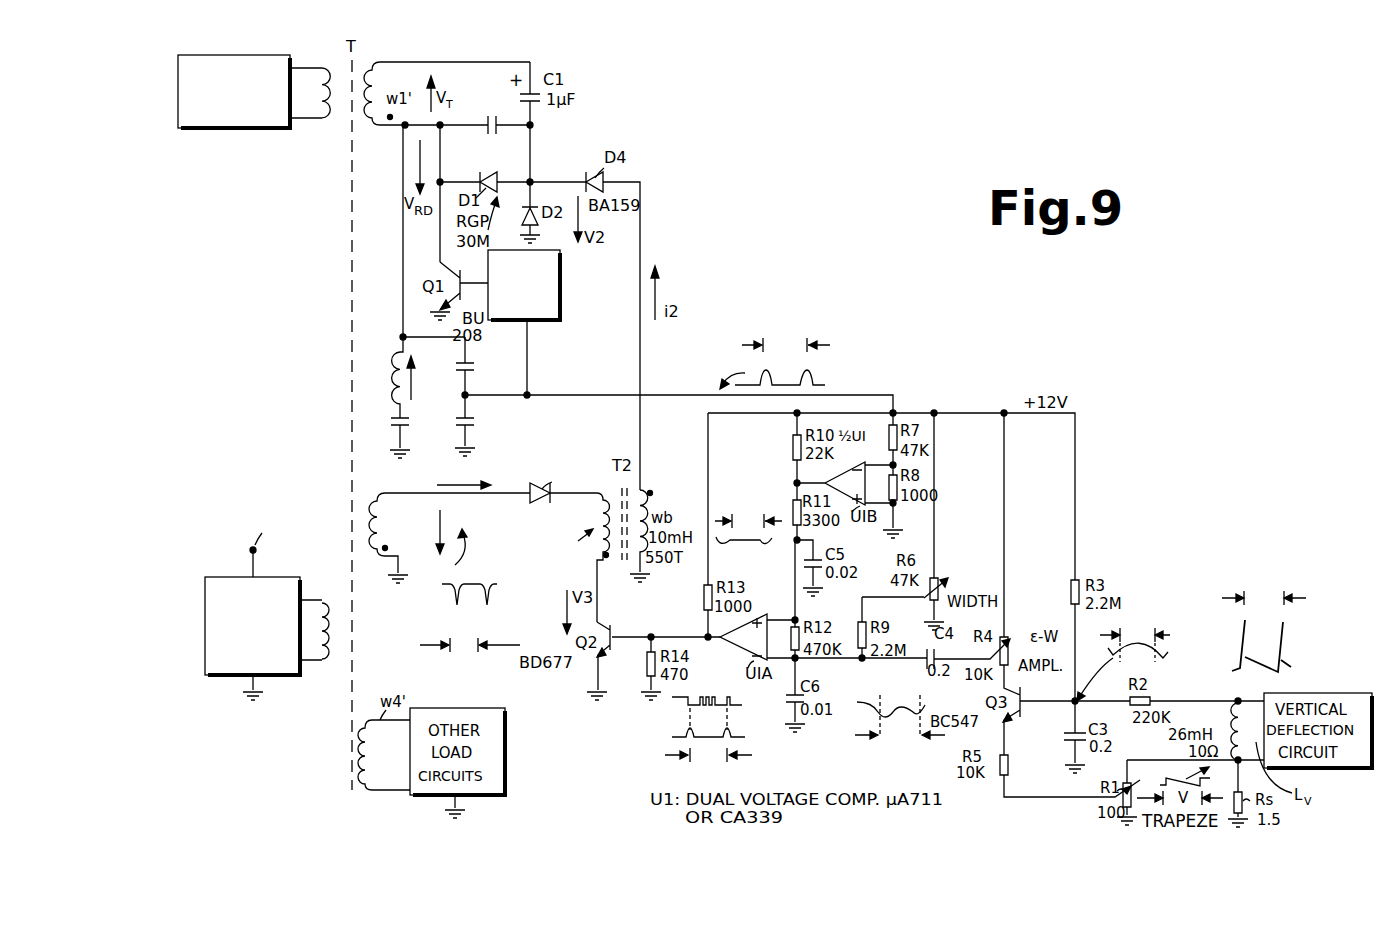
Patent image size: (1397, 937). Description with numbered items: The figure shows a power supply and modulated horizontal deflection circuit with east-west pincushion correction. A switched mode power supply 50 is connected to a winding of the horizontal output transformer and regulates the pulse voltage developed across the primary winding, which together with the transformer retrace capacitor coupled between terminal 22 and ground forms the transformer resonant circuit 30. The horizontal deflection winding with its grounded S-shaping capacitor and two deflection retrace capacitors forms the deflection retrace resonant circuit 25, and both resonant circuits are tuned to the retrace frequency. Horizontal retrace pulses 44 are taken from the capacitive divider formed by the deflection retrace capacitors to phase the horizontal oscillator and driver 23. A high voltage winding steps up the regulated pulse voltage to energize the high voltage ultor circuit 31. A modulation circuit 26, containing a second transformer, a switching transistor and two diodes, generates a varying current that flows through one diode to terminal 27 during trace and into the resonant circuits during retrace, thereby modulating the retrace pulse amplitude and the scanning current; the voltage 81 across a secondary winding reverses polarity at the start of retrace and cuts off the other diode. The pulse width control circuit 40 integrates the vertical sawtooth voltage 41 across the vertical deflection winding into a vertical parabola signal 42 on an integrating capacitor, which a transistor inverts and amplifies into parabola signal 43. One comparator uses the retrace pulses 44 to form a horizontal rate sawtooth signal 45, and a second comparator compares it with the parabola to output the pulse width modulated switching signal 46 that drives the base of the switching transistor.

The terminal 22 is at (440, 178).
The horizontal oscillator and driver 23 is at (561, 267).
The deflection retrace resonant circuit 25 is at (448, 445).
The modulation circuit 26 is at (516, 563).
The terminal 27 is at (532, 179).
The transformer resonant circuit 30 is at (476, 90).
The high voltage ultor circuit 31 is at (296, 576).
The pulse width control circuit 40 is at (1204, 645).
The vertical sawtooth voltage 41 is at (1252, 690).
The vertical parabola signal 42 is at (1163, 660).
The inverted parabola signal 43 is at (985, 688).
The horizontal retrace pulses 44 is at (816, 388).
The horizontal rate sawtooth signal 45 is at (786, 546).
The pulse width modulated switching signal 46 is at (718, 650).
The switched mode power supply 50 is at (229, 140).
The voltage across winding w3' 81 is at (490, 603).